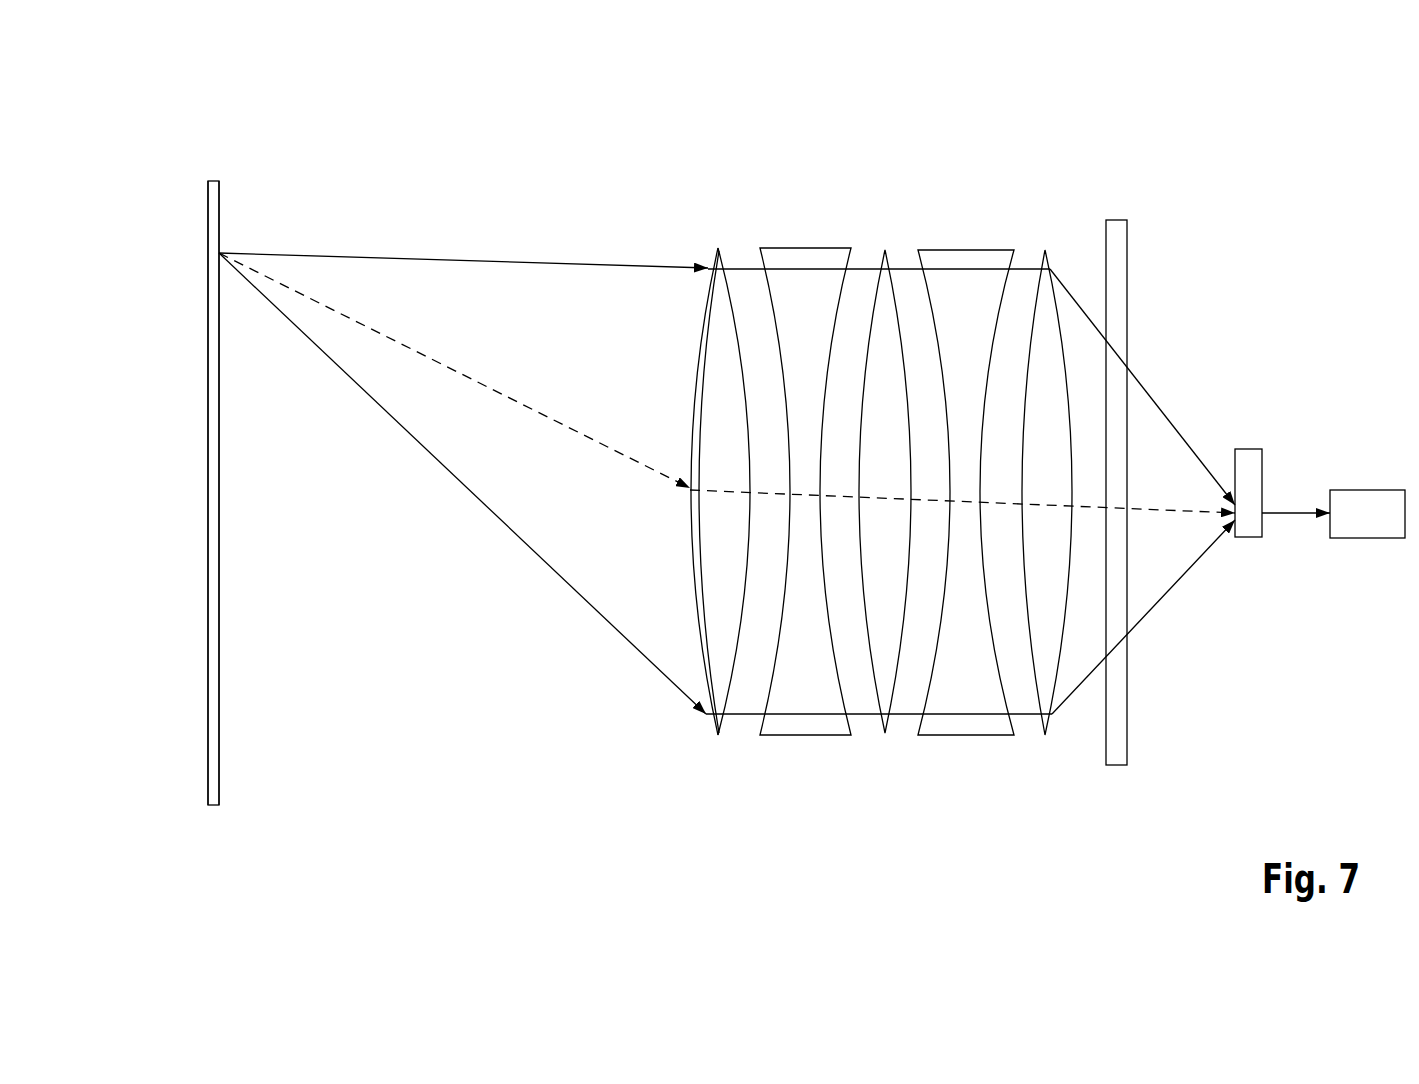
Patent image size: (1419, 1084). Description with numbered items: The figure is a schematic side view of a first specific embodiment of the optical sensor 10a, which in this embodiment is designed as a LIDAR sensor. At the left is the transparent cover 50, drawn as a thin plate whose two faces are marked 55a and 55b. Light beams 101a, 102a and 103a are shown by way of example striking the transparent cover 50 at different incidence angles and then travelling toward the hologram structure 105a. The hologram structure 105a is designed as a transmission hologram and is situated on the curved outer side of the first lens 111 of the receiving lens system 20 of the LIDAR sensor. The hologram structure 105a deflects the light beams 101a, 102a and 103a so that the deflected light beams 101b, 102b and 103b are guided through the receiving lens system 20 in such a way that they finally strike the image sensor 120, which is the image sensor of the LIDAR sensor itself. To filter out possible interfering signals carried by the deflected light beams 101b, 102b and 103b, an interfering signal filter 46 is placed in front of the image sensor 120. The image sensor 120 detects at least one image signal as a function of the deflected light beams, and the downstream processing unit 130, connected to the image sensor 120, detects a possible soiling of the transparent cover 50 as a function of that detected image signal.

The optical sensor 10a is at (782, 182).
The transparent cover 50 is at (214, 805).
The outer surface of window 55a is at (208, 738).
The inner surface of window 55b is at (220, 738).
The first lens element 111 is at (718, 738).
The hologram structure 105a is at (695, 358).
The receiving lens system 20 is at (798, 740).
The interfering signal filter 46 is at (1116, 765).
The image sensor 120 is at (1248, 538).
The processing unit 130 is at (1368, 538).
The light beam 103a is at (512, 262).
The deflected light beam 103b is at (906, 268).
The light beam 101a is at (567, 582).
The deflected light beam 101b is at (906, 716).
The light beam 102a is at (588, 440).
The deflected light beam 102b is at (750, 497).